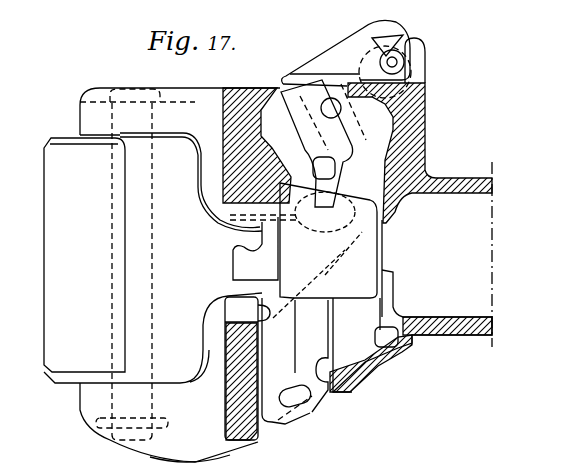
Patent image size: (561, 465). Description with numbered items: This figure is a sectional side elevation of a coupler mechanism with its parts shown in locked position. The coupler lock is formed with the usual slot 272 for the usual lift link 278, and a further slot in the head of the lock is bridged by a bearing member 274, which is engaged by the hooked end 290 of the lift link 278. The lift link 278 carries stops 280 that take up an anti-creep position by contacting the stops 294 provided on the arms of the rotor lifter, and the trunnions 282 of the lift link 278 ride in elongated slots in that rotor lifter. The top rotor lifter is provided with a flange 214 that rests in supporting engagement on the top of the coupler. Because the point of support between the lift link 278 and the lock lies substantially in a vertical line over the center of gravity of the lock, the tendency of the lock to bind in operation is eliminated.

The flange 214 is at (284, 81).
The slot 272 is at (380, 245).
The bearing member 274 is at (370, 189).
The lift link 278 is at (322, 150).
The stops 280 is at (334, 166).
The trunnions 282 is at (314, 86).
The hooked end 290 is at (428, 156).
The stops 294 is at (387, 124).